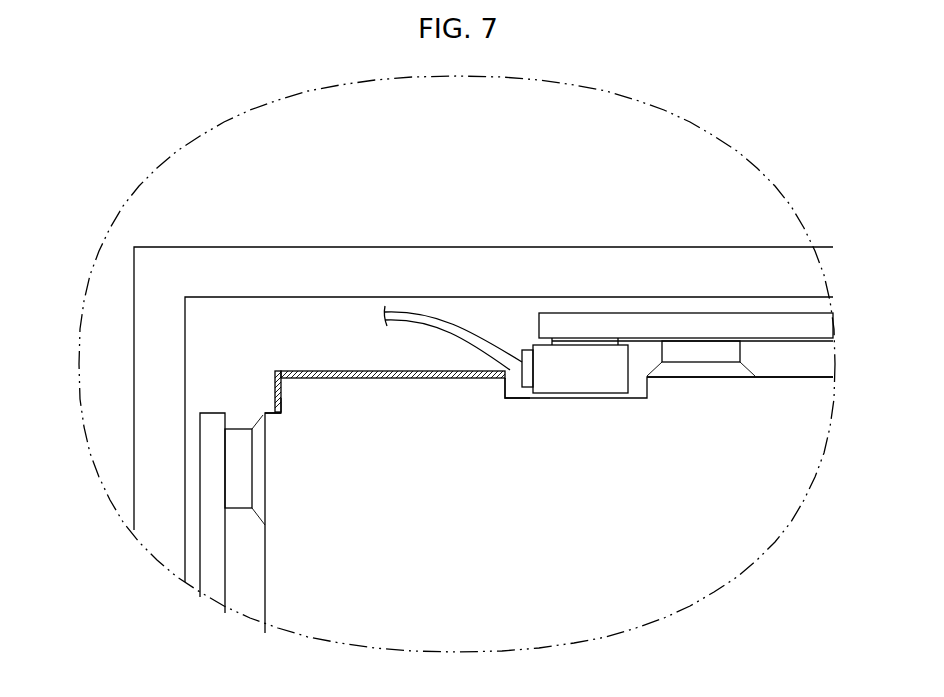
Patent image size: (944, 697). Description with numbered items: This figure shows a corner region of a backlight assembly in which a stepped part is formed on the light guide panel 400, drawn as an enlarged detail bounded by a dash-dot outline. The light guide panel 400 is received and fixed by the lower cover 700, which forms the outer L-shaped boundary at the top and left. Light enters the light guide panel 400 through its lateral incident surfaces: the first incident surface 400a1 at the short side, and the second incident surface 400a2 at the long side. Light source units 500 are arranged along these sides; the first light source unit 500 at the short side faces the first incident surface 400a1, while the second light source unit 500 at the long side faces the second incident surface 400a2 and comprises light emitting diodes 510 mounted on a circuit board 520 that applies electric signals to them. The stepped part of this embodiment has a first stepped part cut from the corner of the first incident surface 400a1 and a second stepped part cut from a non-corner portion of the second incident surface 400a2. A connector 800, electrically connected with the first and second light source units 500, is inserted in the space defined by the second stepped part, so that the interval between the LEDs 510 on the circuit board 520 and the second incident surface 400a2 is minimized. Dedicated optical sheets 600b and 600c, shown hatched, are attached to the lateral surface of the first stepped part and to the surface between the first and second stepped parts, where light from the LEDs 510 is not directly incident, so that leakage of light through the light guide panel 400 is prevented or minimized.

The lower cover 700 is at (197, 262).
The light guide panel 400 is at (509, 465).
The first incident surface 400a1 is at (265, 577).
The second incident surface 400a2 is at (773, 378).
The dedicated optical sheet 600b is at (337, 371).
The dedicated optical sheet 600c is at (273, 375).
The connector 800 is at (546, 362).
The light source unit 500 is at (208, 570).
The light emitting diode 510 is at (683, 350).
The circuit board 520 is at (735, 320).